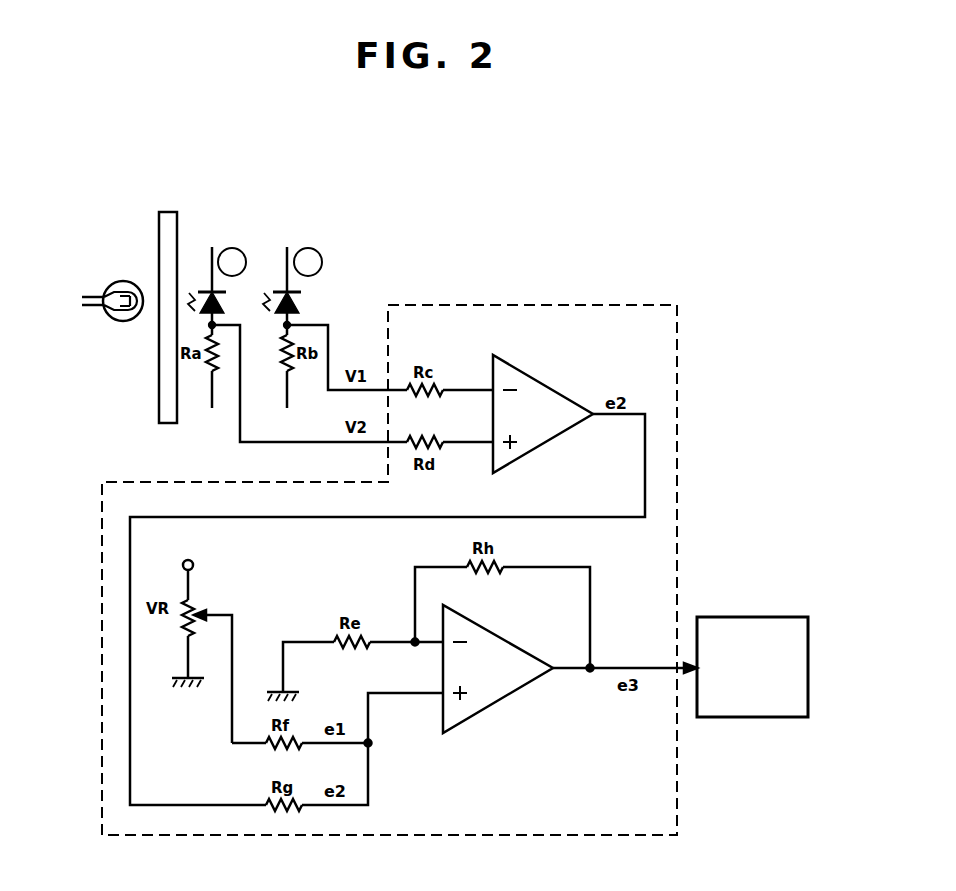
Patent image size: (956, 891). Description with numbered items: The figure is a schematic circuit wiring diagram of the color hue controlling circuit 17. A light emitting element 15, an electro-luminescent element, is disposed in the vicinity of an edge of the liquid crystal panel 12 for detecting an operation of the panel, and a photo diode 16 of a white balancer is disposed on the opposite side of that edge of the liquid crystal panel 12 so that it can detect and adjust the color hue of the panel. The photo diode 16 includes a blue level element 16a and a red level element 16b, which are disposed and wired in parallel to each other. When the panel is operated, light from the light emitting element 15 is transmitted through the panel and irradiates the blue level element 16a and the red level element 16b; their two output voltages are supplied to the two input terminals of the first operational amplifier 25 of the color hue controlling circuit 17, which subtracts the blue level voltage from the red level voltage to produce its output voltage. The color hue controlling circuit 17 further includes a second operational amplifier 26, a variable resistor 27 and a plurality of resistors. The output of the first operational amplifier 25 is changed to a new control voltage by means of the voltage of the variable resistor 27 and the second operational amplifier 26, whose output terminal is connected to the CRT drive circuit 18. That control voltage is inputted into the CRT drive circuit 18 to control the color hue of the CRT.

The liquid crystal panel 12 is at (177, 226).
The light emitting element 15 is at (120, 282).
The photo diode 16 is at (294, 304).
The blue level element 16a is at (235, 315).
The red level element 16b is at (312, 300).
The color hue controlling circuit 17 is at (677, 355).
The CRT drive circuit 18 is at (755, 718).
The first operational amplifier 25 is at (546, 386).
The second operational amplifier 26 is at (505, 700).
The variable resistor 27 is at (197, 600).